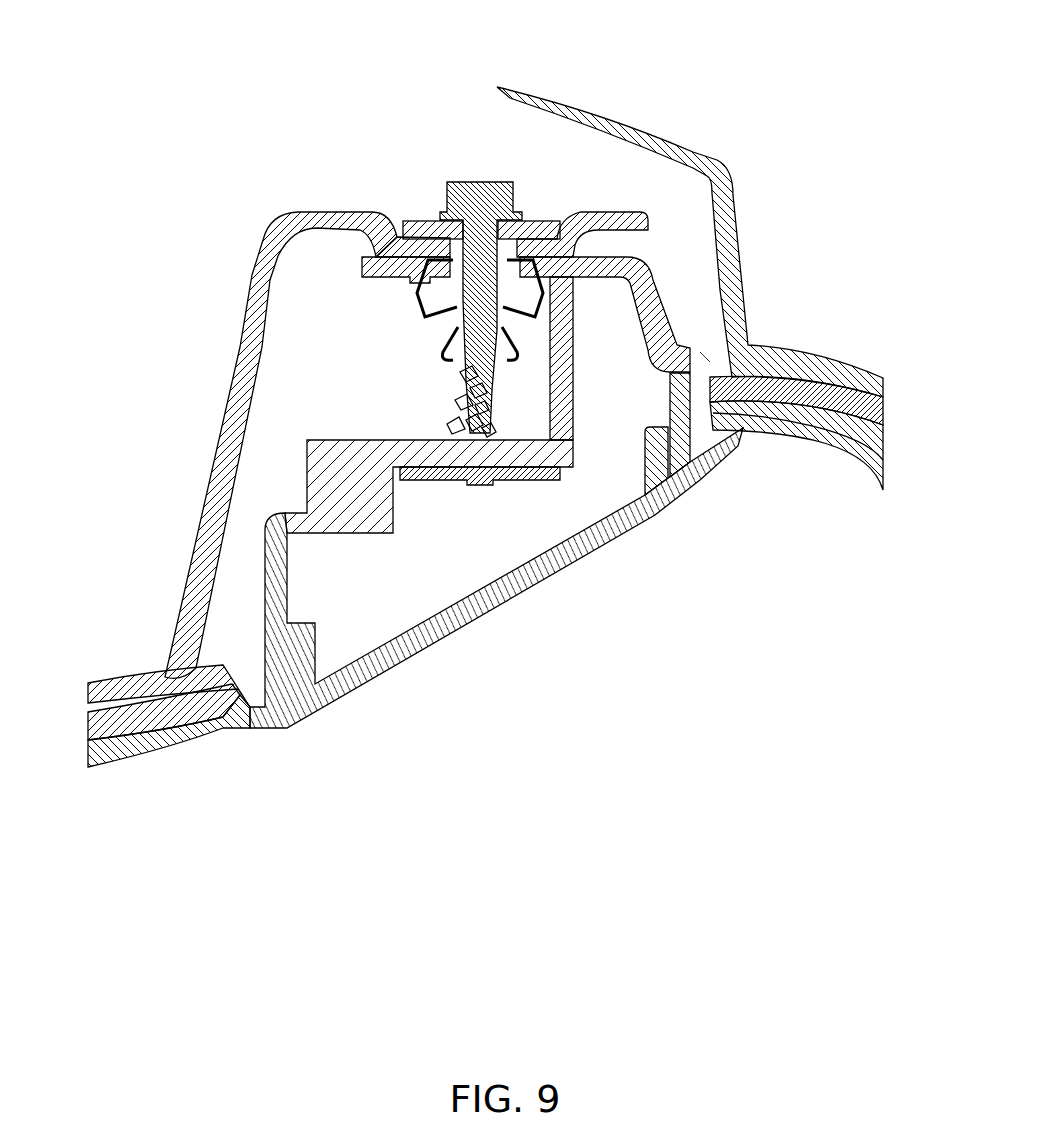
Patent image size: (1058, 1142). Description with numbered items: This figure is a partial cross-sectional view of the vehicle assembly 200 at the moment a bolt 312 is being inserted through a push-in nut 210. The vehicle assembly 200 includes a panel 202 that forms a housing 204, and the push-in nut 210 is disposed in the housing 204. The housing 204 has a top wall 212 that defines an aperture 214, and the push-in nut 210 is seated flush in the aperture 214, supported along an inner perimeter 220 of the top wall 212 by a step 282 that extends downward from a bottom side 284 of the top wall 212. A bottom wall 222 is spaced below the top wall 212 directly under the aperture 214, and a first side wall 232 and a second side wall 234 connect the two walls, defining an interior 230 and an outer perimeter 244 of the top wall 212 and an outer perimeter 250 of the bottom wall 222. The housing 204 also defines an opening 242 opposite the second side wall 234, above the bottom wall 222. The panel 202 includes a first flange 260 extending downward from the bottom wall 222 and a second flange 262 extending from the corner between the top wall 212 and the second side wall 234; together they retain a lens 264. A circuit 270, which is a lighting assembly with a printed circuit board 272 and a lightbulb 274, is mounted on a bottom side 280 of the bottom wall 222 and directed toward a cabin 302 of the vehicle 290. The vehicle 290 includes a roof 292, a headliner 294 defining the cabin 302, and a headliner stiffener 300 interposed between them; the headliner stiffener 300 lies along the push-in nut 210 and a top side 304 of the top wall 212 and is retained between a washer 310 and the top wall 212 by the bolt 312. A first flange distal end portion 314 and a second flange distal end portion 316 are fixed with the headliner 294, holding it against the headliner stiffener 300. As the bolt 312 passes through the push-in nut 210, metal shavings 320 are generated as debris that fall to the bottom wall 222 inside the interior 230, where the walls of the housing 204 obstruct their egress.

The vehicle assembly 200 is at (650, 248).
The panel 202 is at (263, 553).
The housing 204 is at (395, 236).
The push-in nut 210 is at (620, 330).
The top wall 212 is at (312, 212).
The aperture 214 is at (540, 242).
The inner perimeter 220 is at (468, 180).
The bottom wall 222 is at (540, 484).
The interior 230 is at (357, 377).
The first side wall 232 is at (373, 323).
The second side wall 234 is at (675, 340).
The opening 242 is at (332, 440).
The outer perimeter of the top wall 244 is at (710, 375).
The outer perimeter of the bottom wall 250 is at (675, 505).
The first flange 260 is at (262, 622).
The second flange 262 is at (700, 355).
The lens 264 is at (447, 500).
The circuit 270 is at (443, 545).
The printed circuit board 272 is at (490, 485).
The lightbulb 274 is at (478, 486).
The bottom side of the bottom wall 280 is at (318, 693).
The step 282 is at (428, 272).
The bottom side of the top wall 284 is at (385, 278).
The vehicle 290 is at (548, 60).
The roof 292 is at (548, 92).
The headliner 294 is at (883, 420).
The headliner stiffener 300 is at (130, 673).
The cabin 302 is at (685, 725).
The top side of the top wall 304 is at (420, 220).
The washer 310 is at (518, 205).
The bolt 312 is at (553, 112).
The first flange distal end portion 314 is at (250, 730).
The second flange distal end portion 316 is at (733, 455).
The metal shavings 320 is at (560, 485).